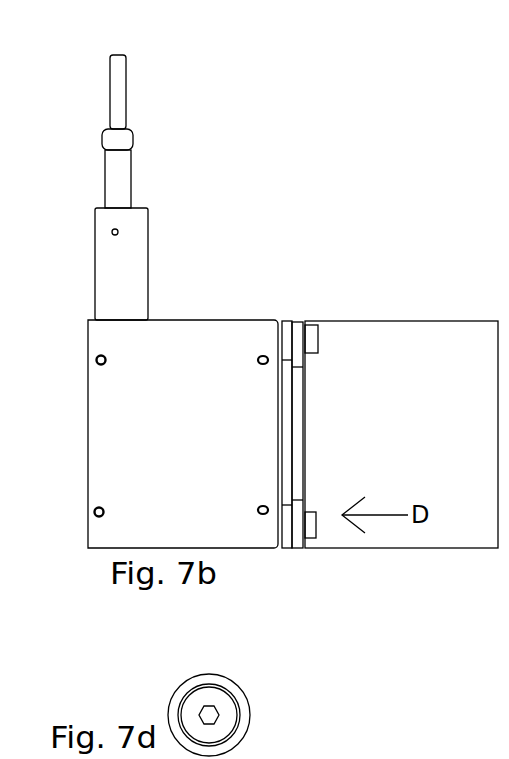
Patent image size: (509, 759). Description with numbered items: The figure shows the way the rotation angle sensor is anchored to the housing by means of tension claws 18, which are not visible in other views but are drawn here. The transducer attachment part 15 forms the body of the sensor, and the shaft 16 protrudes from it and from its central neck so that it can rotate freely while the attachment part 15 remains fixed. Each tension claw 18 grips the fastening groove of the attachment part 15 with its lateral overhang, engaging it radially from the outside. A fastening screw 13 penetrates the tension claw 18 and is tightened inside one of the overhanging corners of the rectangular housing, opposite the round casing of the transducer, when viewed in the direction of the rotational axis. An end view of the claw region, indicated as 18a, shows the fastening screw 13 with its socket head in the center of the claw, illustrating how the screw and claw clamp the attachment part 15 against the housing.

In FIG. 7B, the tension claw 18 is at (294, 330).
In FIG. 7D, the tension claw 18 is at (293, 710).
In FIG. 7B, the transducer attachment part 15 is at (309, 323).
In FIG. 7B, the shaft 16 is at (318, 323).
In FIG. 7D, the hinge pin end 18a is at (174, 697).
In FIG. 7D, the fastening screw 13 is at (217, 710).